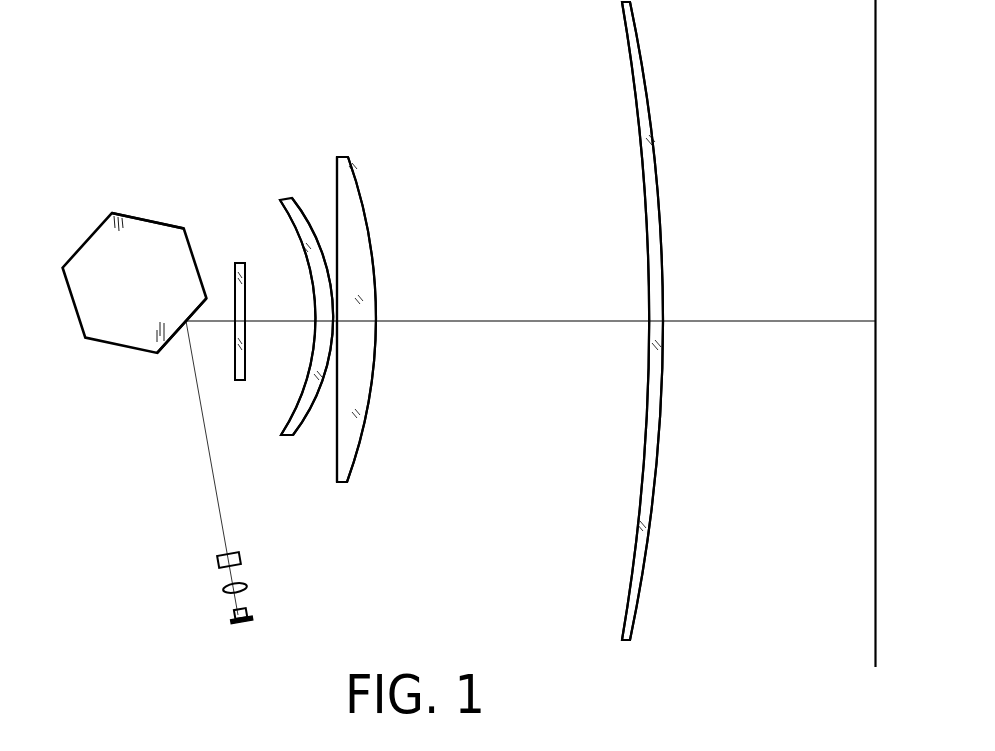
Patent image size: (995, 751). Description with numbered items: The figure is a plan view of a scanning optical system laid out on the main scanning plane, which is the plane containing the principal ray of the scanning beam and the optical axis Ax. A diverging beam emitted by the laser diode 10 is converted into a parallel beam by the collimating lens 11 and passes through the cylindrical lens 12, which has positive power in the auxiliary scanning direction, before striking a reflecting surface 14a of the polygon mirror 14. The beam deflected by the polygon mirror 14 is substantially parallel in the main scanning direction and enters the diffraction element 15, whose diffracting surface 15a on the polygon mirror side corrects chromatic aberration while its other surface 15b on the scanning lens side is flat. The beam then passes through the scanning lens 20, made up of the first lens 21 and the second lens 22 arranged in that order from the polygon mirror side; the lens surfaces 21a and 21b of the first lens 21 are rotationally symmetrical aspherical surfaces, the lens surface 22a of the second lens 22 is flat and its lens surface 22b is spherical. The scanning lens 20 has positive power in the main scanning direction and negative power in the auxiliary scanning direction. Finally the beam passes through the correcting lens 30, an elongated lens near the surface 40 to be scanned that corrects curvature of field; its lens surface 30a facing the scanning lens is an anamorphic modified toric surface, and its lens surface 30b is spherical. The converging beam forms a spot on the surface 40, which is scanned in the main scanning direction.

The laser diode 10 is at (232, 618).
The collimating lens 11 is at (250, 584).
The cylindrical lens 12 is at (217, 560).
The polygon mirror 14 is at (122, 212).
The reflecting surface 14a is at (186, 232).
The diffraction element 15 is at (240, 383).
The diffracting surface 15a is at (236, 272).
The other surface 15b is at (246, 358).
The scanning lens 20 is at (317, 320).
The first lens 21 is at (292, 438).
The lens surface 21a is at (280, 205).
The lens surface 21b is at (294, 208).
The second lens 22 is at (340, 479).
The lens surface 22a is at (338, 167).
The lens surface 22b is at (353, 176).
The correcting lens 30 is at (623, 640).
The lens surface 30a is at (635, 550).
The lens surface 30b is at (640, 598).
The surface to be scanned 40 is at (875, 575).
The optical axis Ax is at (514, 323).